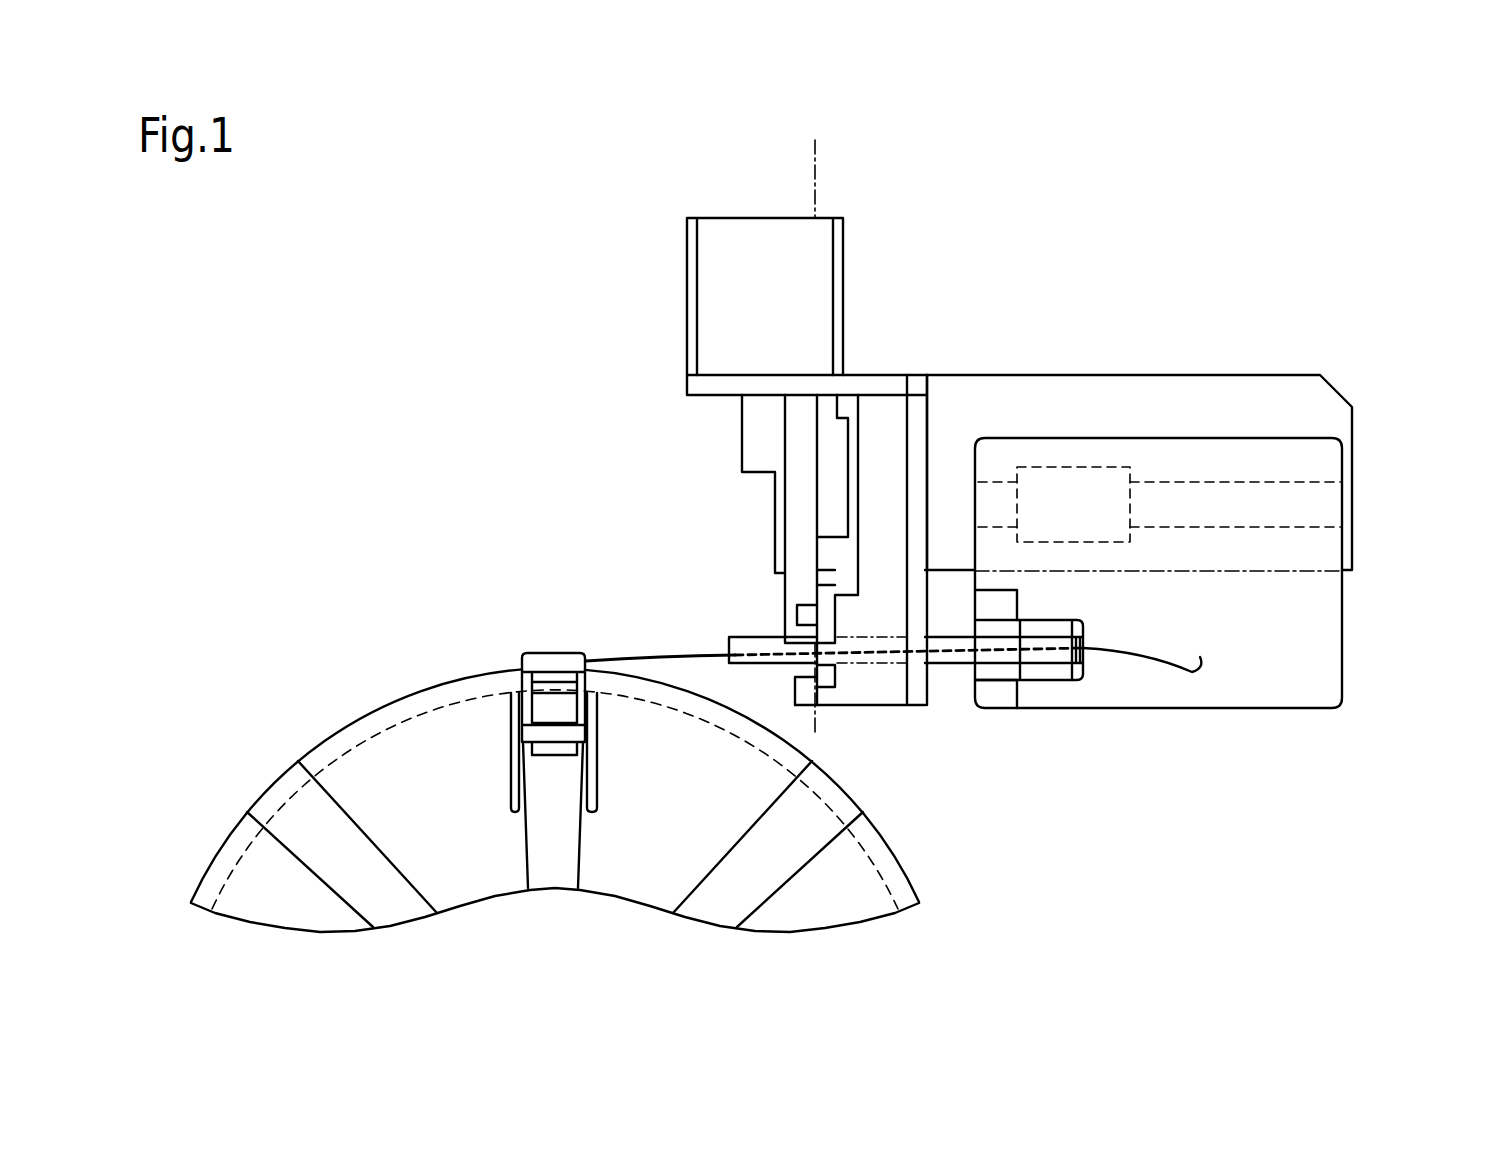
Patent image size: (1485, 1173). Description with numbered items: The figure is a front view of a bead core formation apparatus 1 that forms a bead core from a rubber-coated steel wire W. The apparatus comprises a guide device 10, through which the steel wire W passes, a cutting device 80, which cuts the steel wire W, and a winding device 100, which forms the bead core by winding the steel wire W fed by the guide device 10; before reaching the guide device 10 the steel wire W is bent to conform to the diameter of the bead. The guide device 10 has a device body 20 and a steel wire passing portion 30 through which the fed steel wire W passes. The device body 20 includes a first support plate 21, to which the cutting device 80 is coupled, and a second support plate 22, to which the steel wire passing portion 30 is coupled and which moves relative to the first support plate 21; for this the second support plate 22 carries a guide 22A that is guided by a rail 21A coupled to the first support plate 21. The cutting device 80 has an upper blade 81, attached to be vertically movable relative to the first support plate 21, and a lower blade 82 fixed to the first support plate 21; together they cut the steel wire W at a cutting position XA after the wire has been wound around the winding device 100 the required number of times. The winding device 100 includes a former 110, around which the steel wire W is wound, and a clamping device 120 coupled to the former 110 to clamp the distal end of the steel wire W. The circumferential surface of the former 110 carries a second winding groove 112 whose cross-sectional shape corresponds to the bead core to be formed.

The bead core formation apparatus 1 is at (1364, 313).
The guide device 10 is at (897, 532).
The device body 20 is at (1178, 541).
The first support plate 21 is at (1333, 422).
The rail 21A is at (1195, 481).
The second support plate 22 is at (1333, 465).
The guide 22A is at (1112, 467).
The steel wire passing portion 30 is at (948, 667).
The cutting device 80 is at (792, 523).
The upper blade 81 is at (797, 615).
The lower blade 82 is at (830, 677).
The winding device 100 is at (331, 552).
The former 110 is at (427, 683).
The second winding groove 112 is at (327, 763).
The clamping device 120 is at (550, 652).
The steel wire W is at (650, 655).
The cutting position XA is at (817, 423).